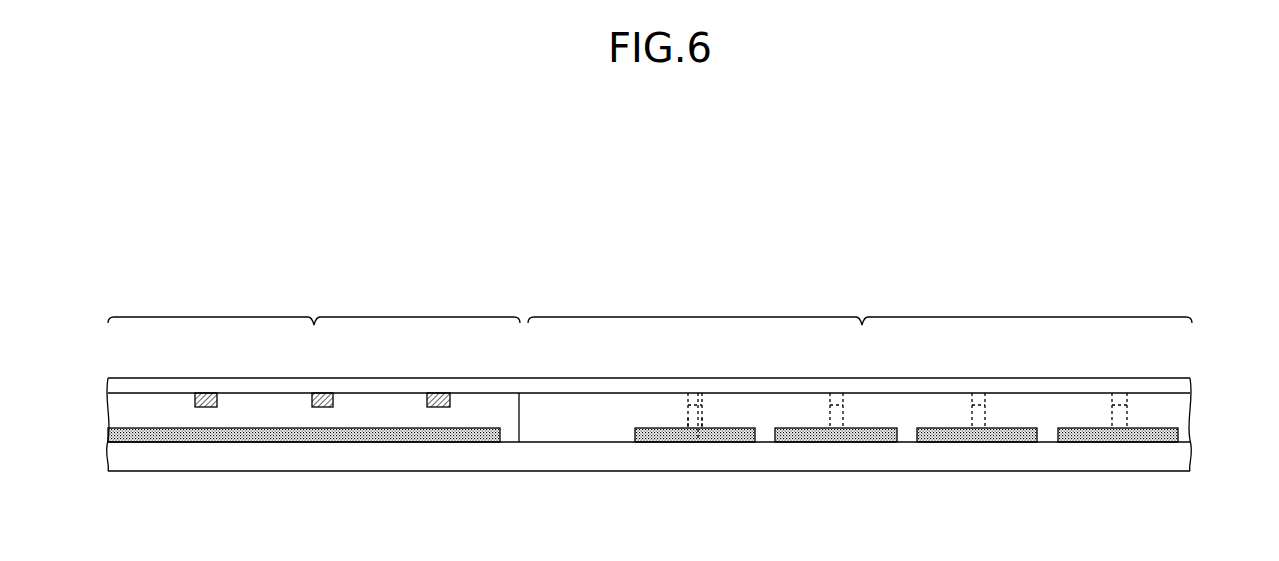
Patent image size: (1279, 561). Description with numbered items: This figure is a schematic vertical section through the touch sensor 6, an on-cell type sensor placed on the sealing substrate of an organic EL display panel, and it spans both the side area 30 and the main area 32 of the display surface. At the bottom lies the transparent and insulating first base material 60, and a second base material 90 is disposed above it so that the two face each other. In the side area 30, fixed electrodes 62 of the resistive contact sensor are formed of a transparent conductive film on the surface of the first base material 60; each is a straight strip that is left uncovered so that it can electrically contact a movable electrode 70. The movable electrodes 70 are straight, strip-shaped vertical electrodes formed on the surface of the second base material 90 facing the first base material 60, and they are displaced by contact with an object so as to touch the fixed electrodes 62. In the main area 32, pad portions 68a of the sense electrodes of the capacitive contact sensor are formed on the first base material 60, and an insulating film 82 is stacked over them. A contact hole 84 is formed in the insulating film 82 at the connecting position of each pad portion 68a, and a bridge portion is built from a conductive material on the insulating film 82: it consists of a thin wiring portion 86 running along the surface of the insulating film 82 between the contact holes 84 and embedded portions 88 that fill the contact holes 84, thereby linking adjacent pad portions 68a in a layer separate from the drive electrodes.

The touch sensor 6 is at (1198, 353).
The side area 30 is at (314, 302).
The main area 32 is at (860, 302).
The first base material 60 is at (1178, 457).
The fixed electrode 62 is at (108, 433).
The pad portion 68a is at (868, 441).
The movable electrode 70 is at (205, 393).
The insulating film 82 is at (1178, 417).
The contact hole 84 is at (698, 442).
The thin wiring portion 86 is at (698, 393).
The embedded portion 88 is at (688, 418).
The second base material 90 is at (1182, 389).